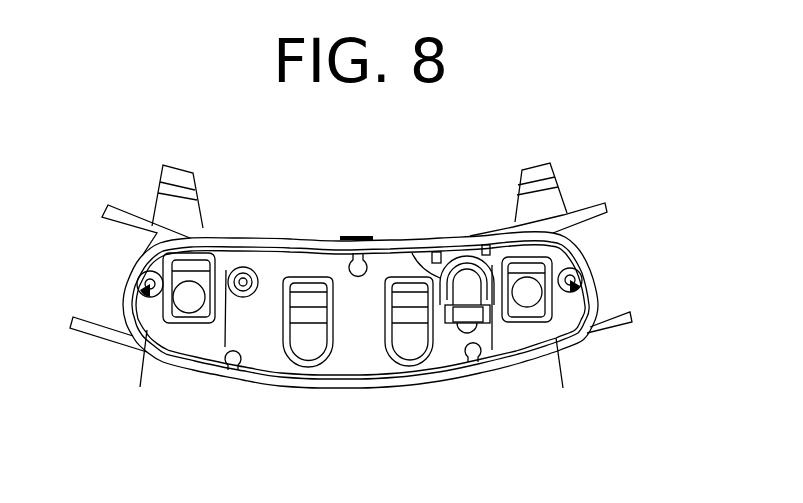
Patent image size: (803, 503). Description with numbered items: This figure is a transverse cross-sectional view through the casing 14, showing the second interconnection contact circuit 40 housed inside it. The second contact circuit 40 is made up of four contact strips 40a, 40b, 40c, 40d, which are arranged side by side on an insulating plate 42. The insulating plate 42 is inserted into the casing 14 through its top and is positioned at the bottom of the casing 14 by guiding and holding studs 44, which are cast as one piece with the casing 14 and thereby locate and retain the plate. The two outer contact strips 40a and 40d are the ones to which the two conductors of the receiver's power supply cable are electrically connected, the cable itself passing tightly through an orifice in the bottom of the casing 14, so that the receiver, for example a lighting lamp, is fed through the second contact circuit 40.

The casing 14 is at (582, 242).
The second interconnection contact circuit 40 is at (303, 327).
The contact strip 40a is at (157, 273).
The contact strip 40b is at (307, 313).
The contact strip 40c is at (408, 313).
The contact strip 40d is at (572, 278).
The insulating plate 42 is at (360, 340).
The guiding and holding studs 44 is at (242, 268).